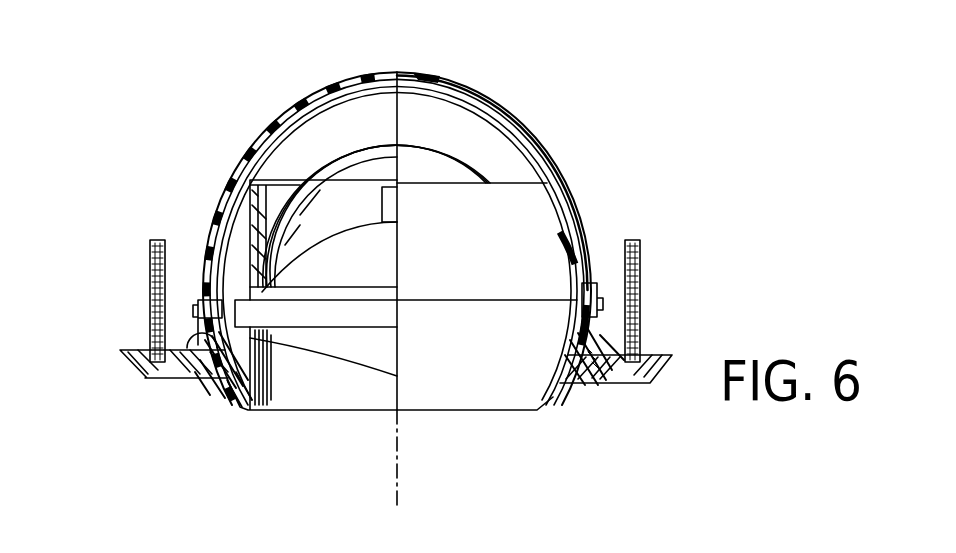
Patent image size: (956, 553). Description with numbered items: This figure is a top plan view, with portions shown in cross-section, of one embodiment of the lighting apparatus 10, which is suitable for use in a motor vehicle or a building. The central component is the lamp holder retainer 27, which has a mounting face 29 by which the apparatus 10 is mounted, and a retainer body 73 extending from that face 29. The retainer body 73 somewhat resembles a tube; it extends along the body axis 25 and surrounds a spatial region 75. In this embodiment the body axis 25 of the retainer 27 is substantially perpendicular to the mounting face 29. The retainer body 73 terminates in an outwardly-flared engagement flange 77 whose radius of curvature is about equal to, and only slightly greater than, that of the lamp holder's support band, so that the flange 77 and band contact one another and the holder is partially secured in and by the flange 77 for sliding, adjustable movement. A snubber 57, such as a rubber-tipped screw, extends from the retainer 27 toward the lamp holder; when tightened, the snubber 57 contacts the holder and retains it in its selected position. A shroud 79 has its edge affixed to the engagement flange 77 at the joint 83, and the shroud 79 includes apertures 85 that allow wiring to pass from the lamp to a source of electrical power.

The lighting apparatus 10 is at (203, 120).
The body axis 25 is at (398, 438).
The retainer 27 is at (193, 297).
The mounting face 29 is at (120, 348).
The snubber 57 is at (597, 378).
The retainer body 73 is at (180, 378).
The spatial region 75 is at (226, 410).
The engagement flange 77 is at (597, 295).
The shroud 79 is at (320, 82).
The joint 83 is at (175, 316).
The apertures 85 is at (430, 78).